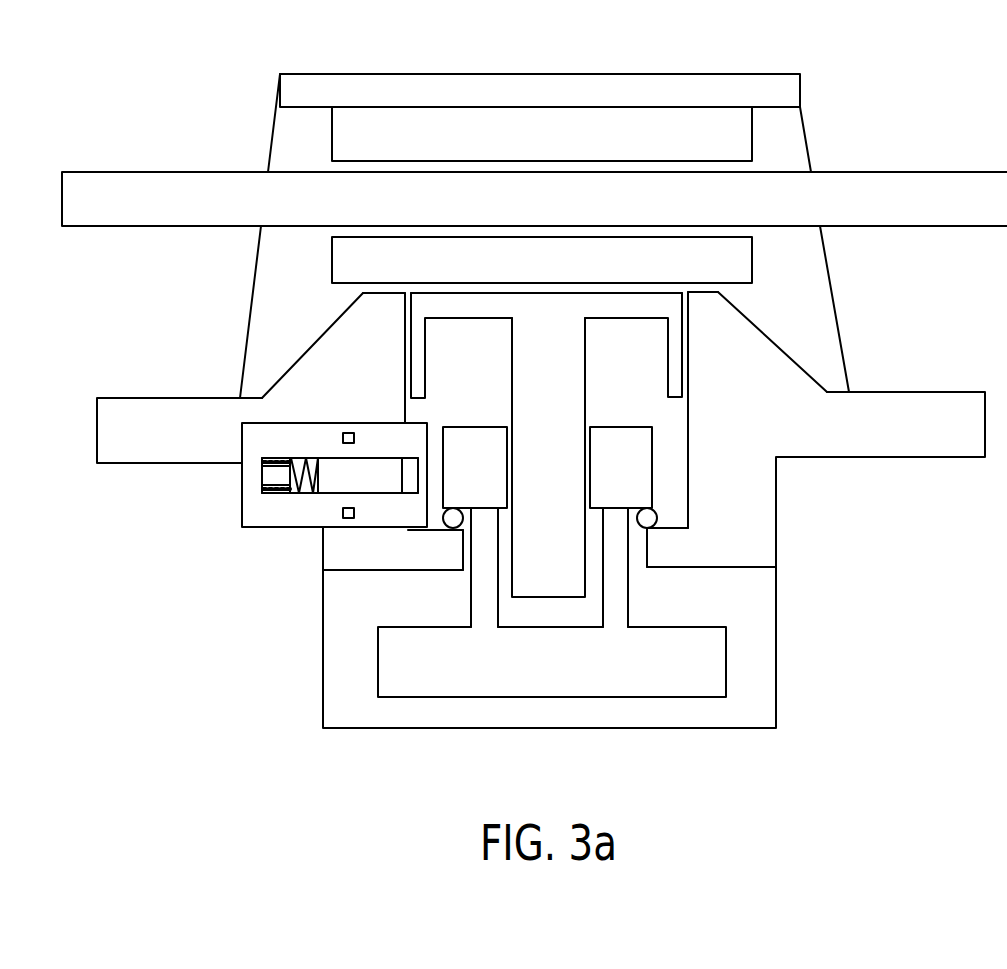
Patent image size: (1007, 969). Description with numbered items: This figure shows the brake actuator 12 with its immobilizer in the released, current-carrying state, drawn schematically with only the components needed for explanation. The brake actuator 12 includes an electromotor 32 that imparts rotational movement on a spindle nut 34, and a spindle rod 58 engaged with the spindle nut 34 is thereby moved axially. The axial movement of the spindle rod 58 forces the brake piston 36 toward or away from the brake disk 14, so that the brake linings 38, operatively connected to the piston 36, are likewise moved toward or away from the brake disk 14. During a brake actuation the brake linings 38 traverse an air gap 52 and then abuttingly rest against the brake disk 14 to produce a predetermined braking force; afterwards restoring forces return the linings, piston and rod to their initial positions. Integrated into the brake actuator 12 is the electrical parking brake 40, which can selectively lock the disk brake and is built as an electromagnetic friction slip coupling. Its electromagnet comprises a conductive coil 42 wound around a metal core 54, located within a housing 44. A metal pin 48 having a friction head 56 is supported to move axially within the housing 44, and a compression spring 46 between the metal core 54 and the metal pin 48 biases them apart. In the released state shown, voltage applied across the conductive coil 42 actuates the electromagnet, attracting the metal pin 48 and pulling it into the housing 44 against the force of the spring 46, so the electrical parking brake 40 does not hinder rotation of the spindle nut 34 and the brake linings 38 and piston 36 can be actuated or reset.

The brake actuator 12 is at (572, 682).
The brake disk 14 is at (140, 173).
The electromotor 32 is at (670, 698).
The spindle nut 34 is at (633, 475).
The brake piston 36 is at (663, 305).
The brake linings 38 is at (653, 255).
The electrical parking brake 40 is at (242, 528).
The conductive coil 42 is at (277, 495).
The housing 44 is at (258, 440).
The compression spring 46 is at (305, 495).
The metal pin 48 is at (388, 483).
The air gap 52 is at (710, 165).
The metal core 54 is at (278, 478).
The friction head 56 is at (410, 460).
The spindle rod 58 is at (568, 395).